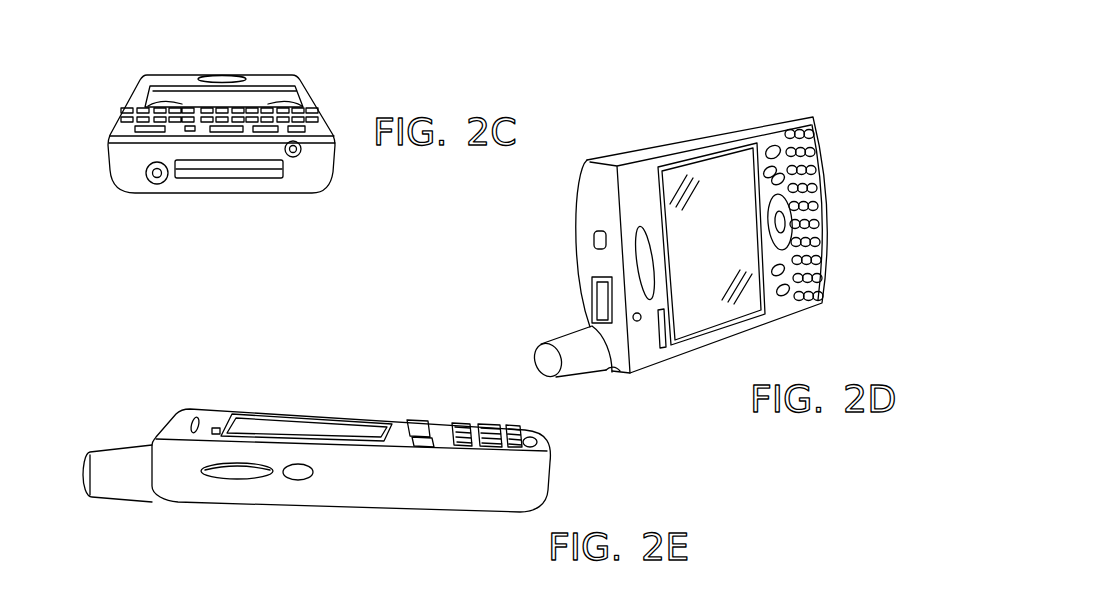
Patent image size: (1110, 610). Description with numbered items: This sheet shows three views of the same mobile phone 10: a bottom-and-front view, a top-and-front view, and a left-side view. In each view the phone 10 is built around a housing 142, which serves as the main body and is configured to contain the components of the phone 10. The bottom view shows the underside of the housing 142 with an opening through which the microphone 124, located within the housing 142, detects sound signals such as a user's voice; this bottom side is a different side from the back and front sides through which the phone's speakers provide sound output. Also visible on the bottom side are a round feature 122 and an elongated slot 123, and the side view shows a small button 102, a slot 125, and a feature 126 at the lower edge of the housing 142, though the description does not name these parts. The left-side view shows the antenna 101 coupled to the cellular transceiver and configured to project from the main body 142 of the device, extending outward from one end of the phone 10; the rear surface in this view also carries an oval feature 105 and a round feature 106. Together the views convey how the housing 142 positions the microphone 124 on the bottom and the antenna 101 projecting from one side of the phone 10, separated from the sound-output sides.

In FIG. 2C, the mobile phone 10 is at (95, 103).
In FIG. 2D, the mobile phone 10 is at (848, 222).
In FIG. 2E, the mobile phone 10 is at (140, 392).
In FIG. 2C, the housing 142 is at (330, 95).
In FIG. 2D, the housing 142 is at (670, 130).
In FIG. 2E, the housing 142 is at (423, 497).
In FIG. 2C, the microphone 122 is at (137, 186).
In FIG. 2C, the connector port 123 is at (230, 188).
In FIG. 2C, the microphone 124 is at (310, 158).
In FIG. 2D, the side button 102 is at (584, 242).
In FIG. 2D, the expansion card slot 125 is at (567, 296).
In FIG. 2D, the infrared port 126 is at (617, 340).
In FIG. 2E, the antenna 101 is at (107, 508).
In FIG. 2E, the speaker 105 is at (225, 487).
In FIG. 2E, the reset button 106 is at (308, 487).